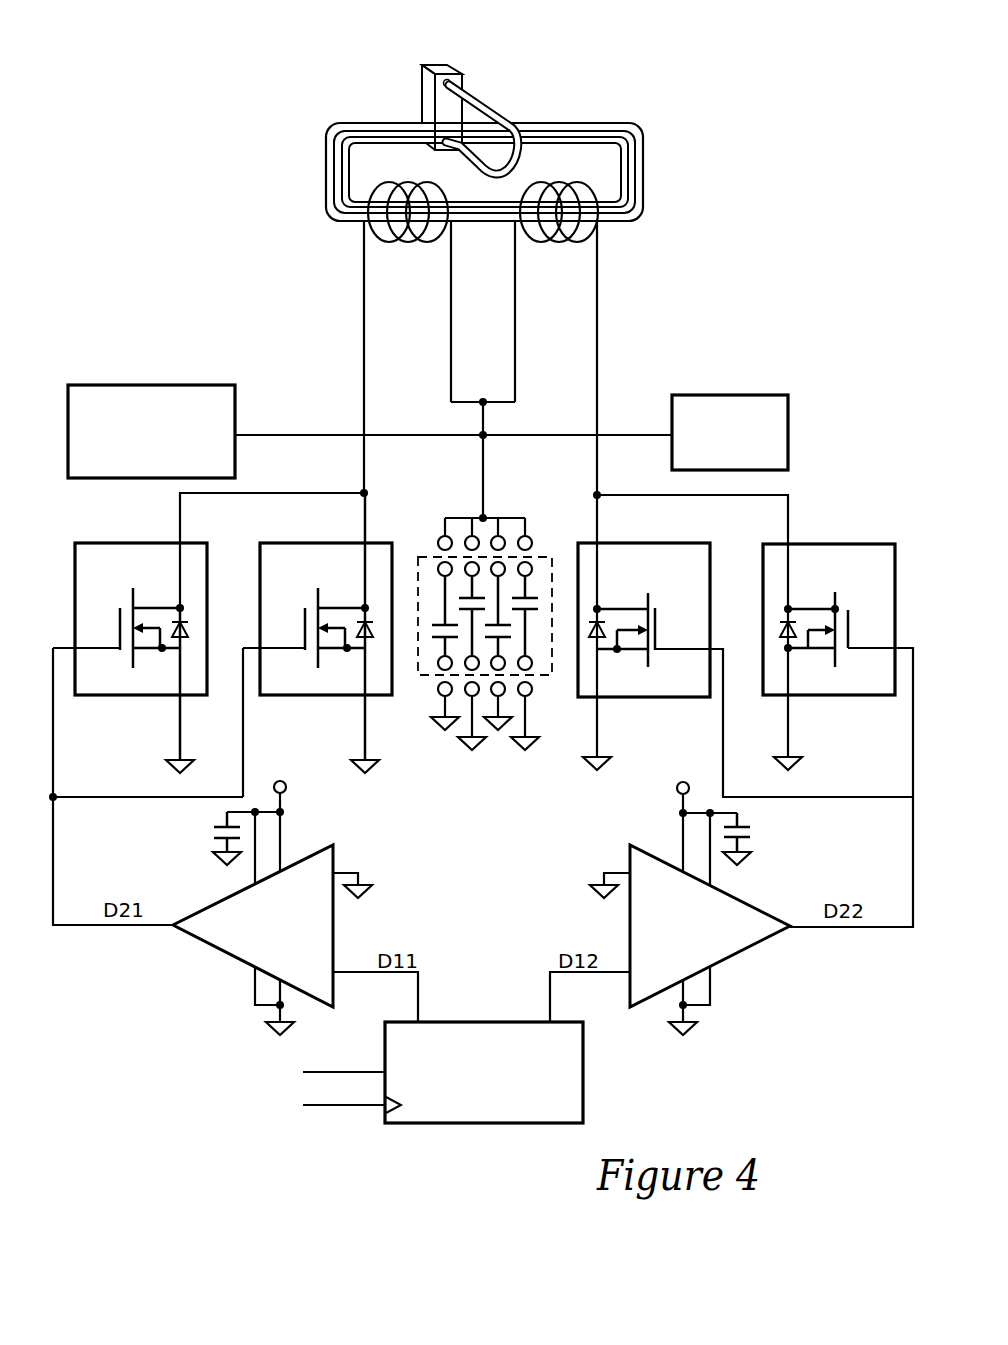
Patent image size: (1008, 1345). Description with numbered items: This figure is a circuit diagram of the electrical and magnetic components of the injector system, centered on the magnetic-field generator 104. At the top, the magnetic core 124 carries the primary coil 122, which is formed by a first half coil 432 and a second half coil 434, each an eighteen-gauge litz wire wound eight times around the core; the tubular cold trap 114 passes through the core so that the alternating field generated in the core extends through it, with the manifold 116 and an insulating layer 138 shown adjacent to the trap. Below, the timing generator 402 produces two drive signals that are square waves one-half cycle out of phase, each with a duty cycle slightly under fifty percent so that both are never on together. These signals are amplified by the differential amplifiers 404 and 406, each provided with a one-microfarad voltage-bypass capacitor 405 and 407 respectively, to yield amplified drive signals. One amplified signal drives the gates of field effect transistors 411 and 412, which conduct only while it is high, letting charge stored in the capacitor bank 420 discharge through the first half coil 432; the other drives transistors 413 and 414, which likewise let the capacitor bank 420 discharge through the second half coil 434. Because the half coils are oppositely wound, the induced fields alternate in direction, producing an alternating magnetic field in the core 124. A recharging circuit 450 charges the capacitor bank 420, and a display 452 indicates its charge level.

The magnetic-field generator 104 is at (308, 124).
The tubular cold trap 114 is at (487, 92).
The manifold 116 is at (404, 97).
The primary coil 122 is at (294, 227).
The magnetic core 124 is at (326, 178).
The insulating layer 138 is at (447, 66).
The timing generator 402 is at (464, 1107).
The differential amplifier 404 is at (284, 941).
The voltage-bypass capacitor 405 is at (226, 826).
The differential amplifier 406 is at (712, 941).
The voltage-bypass capacitor 407 is at (750, 826).
The field effect transistor 411 is at (124, 579).
The field effect transistor 412 is at (309, 579).
The field effect transistor 413 is at (704, 579).
The field effect transistor 414 is at (877, 579).
The capacitor bank 420 is at (415, 553).
The first half coil 432 is at (392, 246).
The second half coil 434 is at (540, 246).
The recharging circuit 450 is at (132, 462).
The display 452 is at (710, 454).